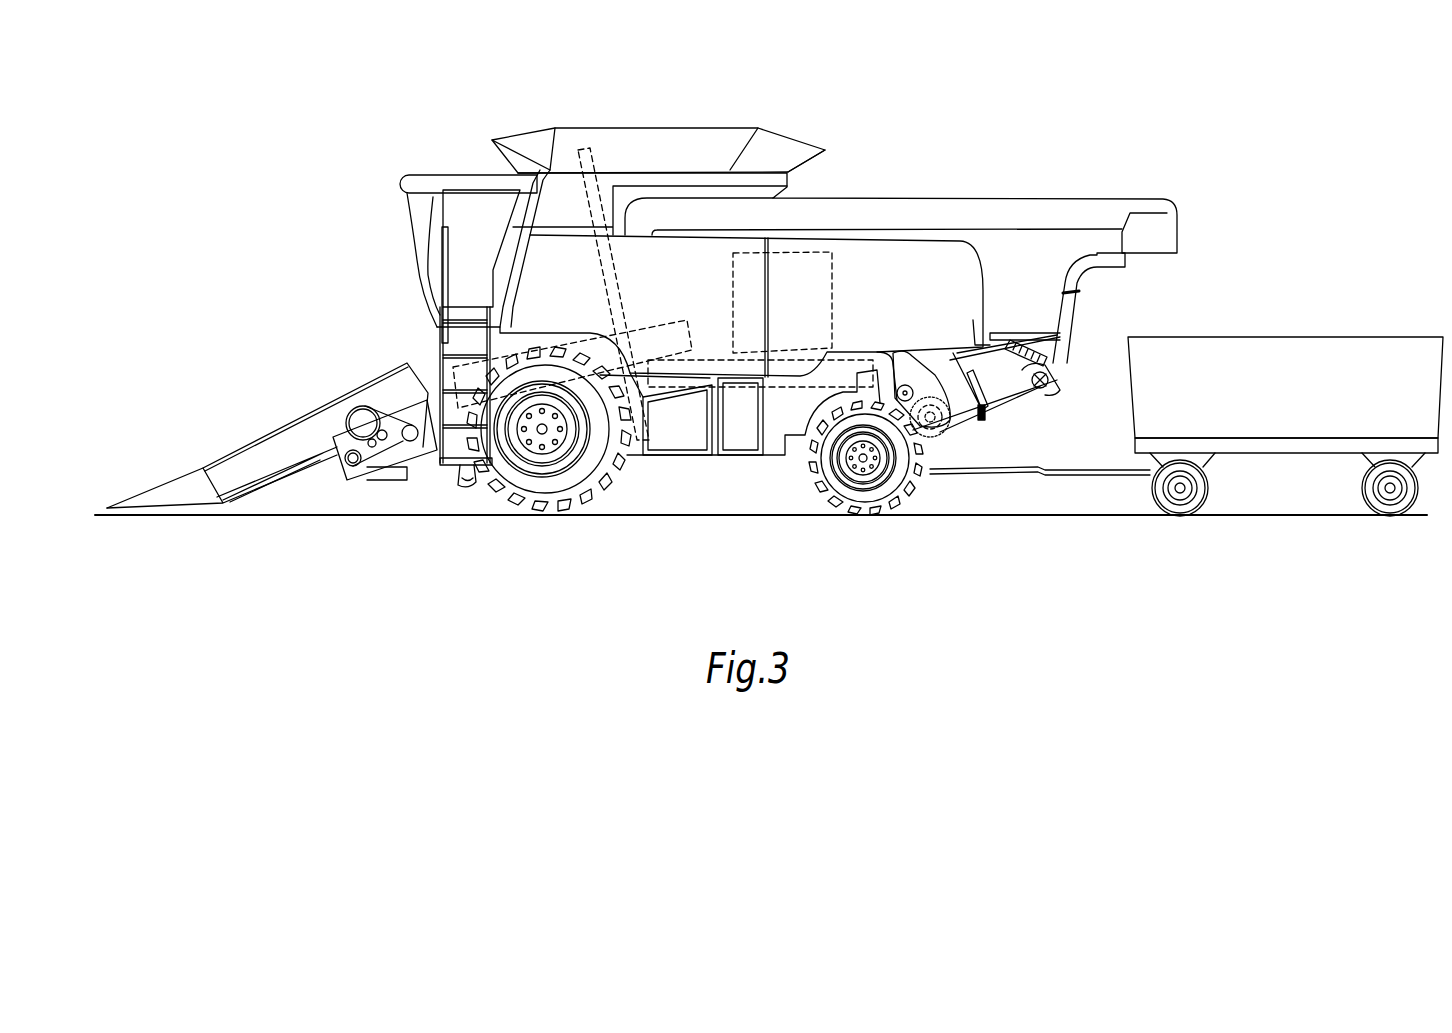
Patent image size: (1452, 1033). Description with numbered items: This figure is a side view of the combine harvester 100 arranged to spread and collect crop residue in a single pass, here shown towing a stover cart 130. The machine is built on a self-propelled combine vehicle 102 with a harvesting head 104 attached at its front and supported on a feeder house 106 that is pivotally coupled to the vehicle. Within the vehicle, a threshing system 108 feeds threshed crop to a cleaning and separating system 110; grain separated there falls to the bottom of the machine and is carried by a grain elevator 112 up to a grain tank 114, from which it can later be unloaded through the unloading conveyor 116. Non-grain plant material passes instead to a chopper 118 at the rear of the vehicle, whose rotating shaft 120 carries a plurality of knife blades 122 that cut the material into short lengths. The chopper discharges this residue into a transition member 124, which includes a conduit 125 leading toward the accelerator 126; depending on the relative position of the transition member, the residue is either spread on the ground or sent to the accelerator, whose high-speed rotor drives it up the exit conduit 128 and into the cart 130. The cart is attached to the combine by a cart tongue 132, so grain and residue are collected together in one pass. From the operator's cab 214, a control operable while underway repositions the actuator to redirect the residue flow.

The combine harvester 100 is at (280, 280).
The self-propelled combine vehicle 102 is at (420, 175).
The harvesting head 104 is at (275, 427).
The feeder house 106 is at (360, 385).
The threshing system 108 is at (653, 330).
The cleaning and separating system 110 is at (827, 273).
The grain elevator 112 is at (620, 264).
The grain tank 114 is at (800, 142).
The unloading conveyor 116 is at (1038, 200).
The chopper 118 is at (932, 448).
The rotating shaft 120 is at (963, 420).
The knife blades 122 is at (965, 373).
The transition member 124 is at (1030, 420).
The conduit 125 is at (1007, 410).
The accelerator 126 is at (1053, 388).
The exit conduit 128 is at (1072, 265).
The stover cart 130 is at (1290, 338).
The cart tongue 132 is at (1093, 473).
The operator's cab 214 is at (467, 172).